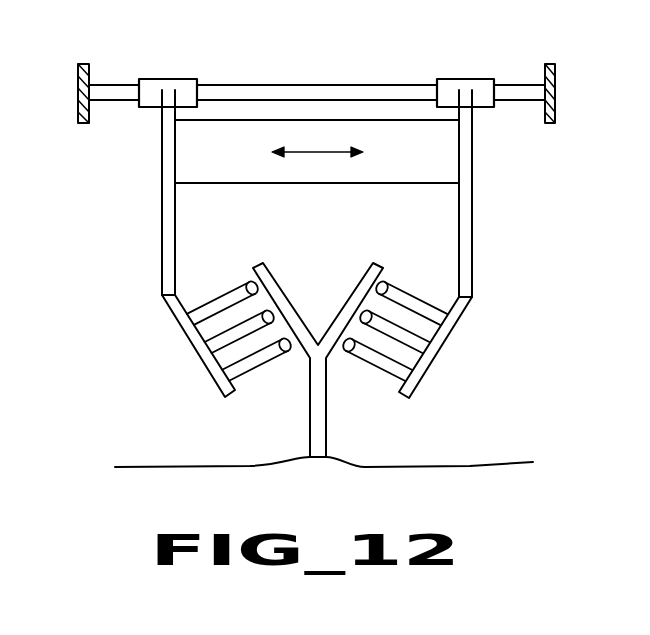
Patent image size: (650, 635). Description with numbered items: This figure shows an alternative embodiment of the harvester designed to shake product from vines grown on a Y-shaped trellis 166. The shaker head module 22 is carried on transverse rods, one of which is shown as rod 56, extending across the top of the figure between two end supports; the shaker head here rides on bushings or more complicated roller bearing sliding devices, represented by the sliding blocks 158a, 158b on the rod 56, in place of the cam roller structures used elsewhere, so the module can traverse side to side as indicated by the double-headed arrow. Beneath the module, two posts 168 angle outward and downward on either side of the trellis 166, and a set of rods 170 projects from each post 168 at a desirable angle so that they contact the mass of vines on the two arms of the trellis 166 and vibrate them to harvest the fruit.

The shaker head module 22 is at (207, 195).
The transverse rod 56 is at (332, 88).
The left slide block 158a is at (157, 79).
The right slide block 158b is at (452, 79).
The Y-shaped trellis 166 is at (327, 423).
The post 168 is at (447, 337).
The rod 170 is at (404, 289).